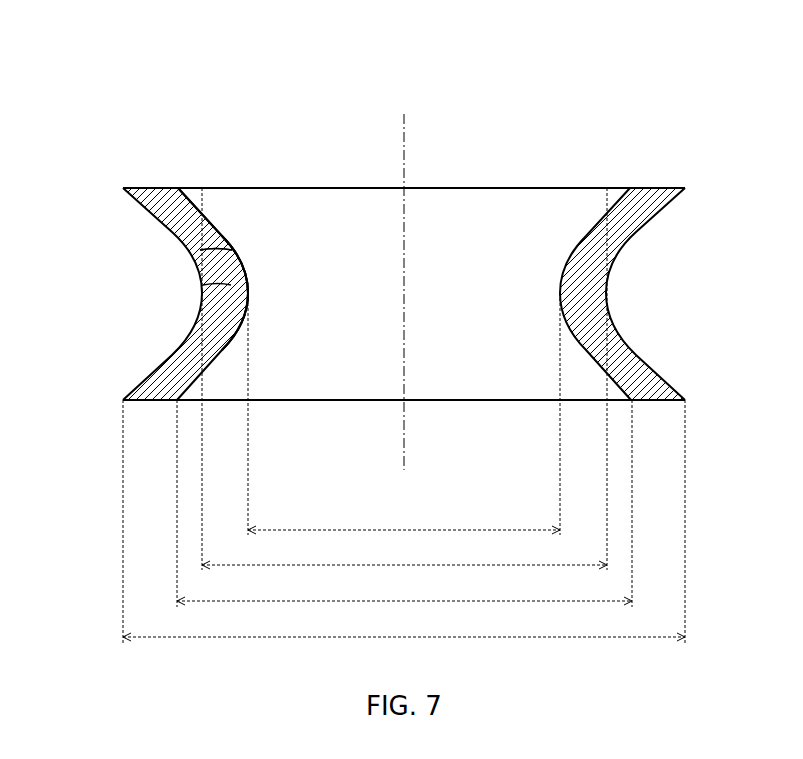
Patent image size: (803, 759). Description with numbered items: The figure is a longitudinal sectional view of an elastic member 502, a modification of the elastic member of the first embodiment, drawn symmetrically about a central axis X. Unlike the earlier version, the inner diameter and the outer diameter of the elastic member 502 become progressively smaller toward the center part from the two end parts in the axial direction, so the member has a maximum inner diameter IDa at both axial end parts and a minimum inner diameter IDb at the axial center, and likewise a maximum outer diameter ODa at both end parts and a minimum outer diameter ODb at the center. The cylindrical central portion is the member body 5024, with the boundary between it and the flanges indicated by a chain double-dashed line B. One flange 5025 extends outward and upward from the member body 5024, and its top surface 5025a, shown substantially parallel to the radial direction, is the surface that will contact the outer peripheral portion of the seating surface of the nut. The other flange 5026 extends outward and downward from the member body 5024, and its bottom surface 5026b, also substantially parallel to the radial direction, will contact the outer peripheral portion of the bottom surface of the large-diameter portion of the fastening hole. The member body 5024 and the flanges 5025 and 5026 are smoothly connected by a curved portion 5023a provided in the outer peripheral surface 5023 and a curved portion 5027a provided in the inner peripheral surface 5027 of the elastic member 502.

The elastic member 502 is at (633, 112).
The outer peripheral surface 5023 is at (179, 252).
The curved portion 5023a is at (202, 297).
The member body 5024 is at (203, 279).
The flange 5025 is at (163, 216).
The top surface 5025a is at (332, 188).
The flange 5026 is at (163, 385).
The bottom surface 5026b is at (318, 402).
The inner peripheral surface 5027 is at (221, 217).
The curved portion 5027a is at (249, 289).
The chain double-dashed line B is at (238, 250).
The central axis X is at (403, 280).
The maximum inner diameter IDa is at (404, 593).
The minimum inner diameter IDb is at (404, 522).
The maximum outer diameter ODa is at (404, 629).
The minimum outer diameter ODb is at (404, 557).